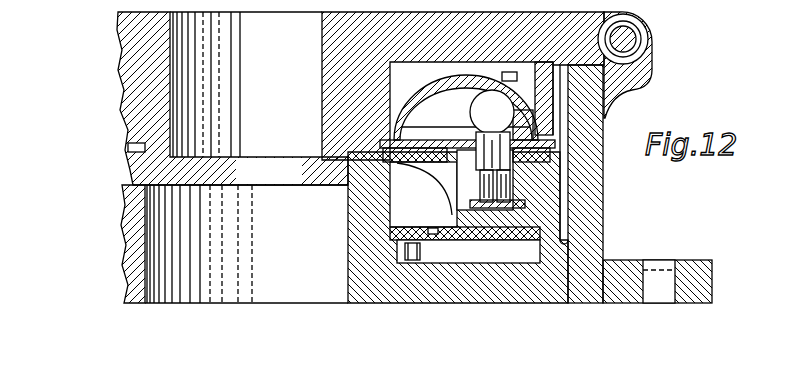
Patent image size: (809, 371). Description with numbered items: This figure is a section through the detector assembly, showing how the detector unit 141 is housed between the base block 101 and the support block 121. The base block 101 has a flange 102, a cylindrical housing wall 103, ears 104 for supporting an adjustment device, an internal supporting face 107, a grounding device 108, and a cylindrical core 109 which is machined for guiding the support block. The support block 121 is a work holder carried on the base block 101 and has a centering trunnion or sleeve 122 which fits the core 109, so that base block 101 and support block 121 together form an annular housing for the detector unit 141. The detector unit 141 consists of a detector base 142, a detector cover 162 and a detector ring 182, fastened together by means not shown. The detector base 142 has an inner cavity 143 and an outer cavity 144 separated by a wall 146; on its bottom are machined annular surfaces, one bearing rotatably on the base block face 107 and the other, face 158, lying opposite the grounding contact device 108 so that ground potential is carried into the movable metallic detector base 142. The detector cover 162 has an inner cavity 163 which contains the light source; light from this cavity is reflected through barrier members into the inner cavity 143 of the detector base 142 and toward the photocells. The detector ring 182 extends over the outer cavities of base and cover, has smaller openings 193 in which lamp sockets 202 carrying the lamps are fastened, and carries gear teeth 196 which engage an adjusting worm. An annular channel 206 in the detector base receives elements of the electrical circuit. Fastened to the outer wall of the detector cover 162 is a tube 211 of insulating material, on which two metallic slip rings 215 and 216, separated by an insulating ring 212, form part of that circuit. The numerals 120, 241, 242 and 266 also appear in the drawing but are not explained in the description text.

The base block 101 is at (122, 235).
The flange 102 is at (713, 275).
The cylindrical housing wall 103 is at (603, 218).
The ears 104 is at (652, 70).
The internal supporting face 107 is at (603, 233).
The grounding device 108 is at (407, 245).
The cylindrical core 109 is at (450, 198).
The pivot pin 120 is at (650, 26).
The support block 121 is at (118, 58).
The centering trunnion 122 is at (269, 169).
The detector unit 141 is at (400, 68).
The detector base 142 is at (397, 190).
The inner cavity 143 is at (423, 194).
The outer cavity 144 is at (517, 212).
The wall 146 is at (450, 207).
The face 158 is at (432, 238).
The detector cover 162 is at (412, 92).
The inner cavity 163 is at (467, 117).
The detector ring 182 is at (603, 153).
The openings 193 is at (473, 205).
The gear teeth 196 is at (706, 150).
The lamp sockets 202 is at (505, 207).
The annular channel 206 is at (435, 238).
The tube 211 is at (650, 50).
The insulating ring 212 is at (603, 115).
The slip ring 215 is at (603, 86).
The slip ring 216 is at (605, 122).
The element 241 is at (131, 356).
The element 242 is at (51, 360).
The stop 266 is at (507, 73).